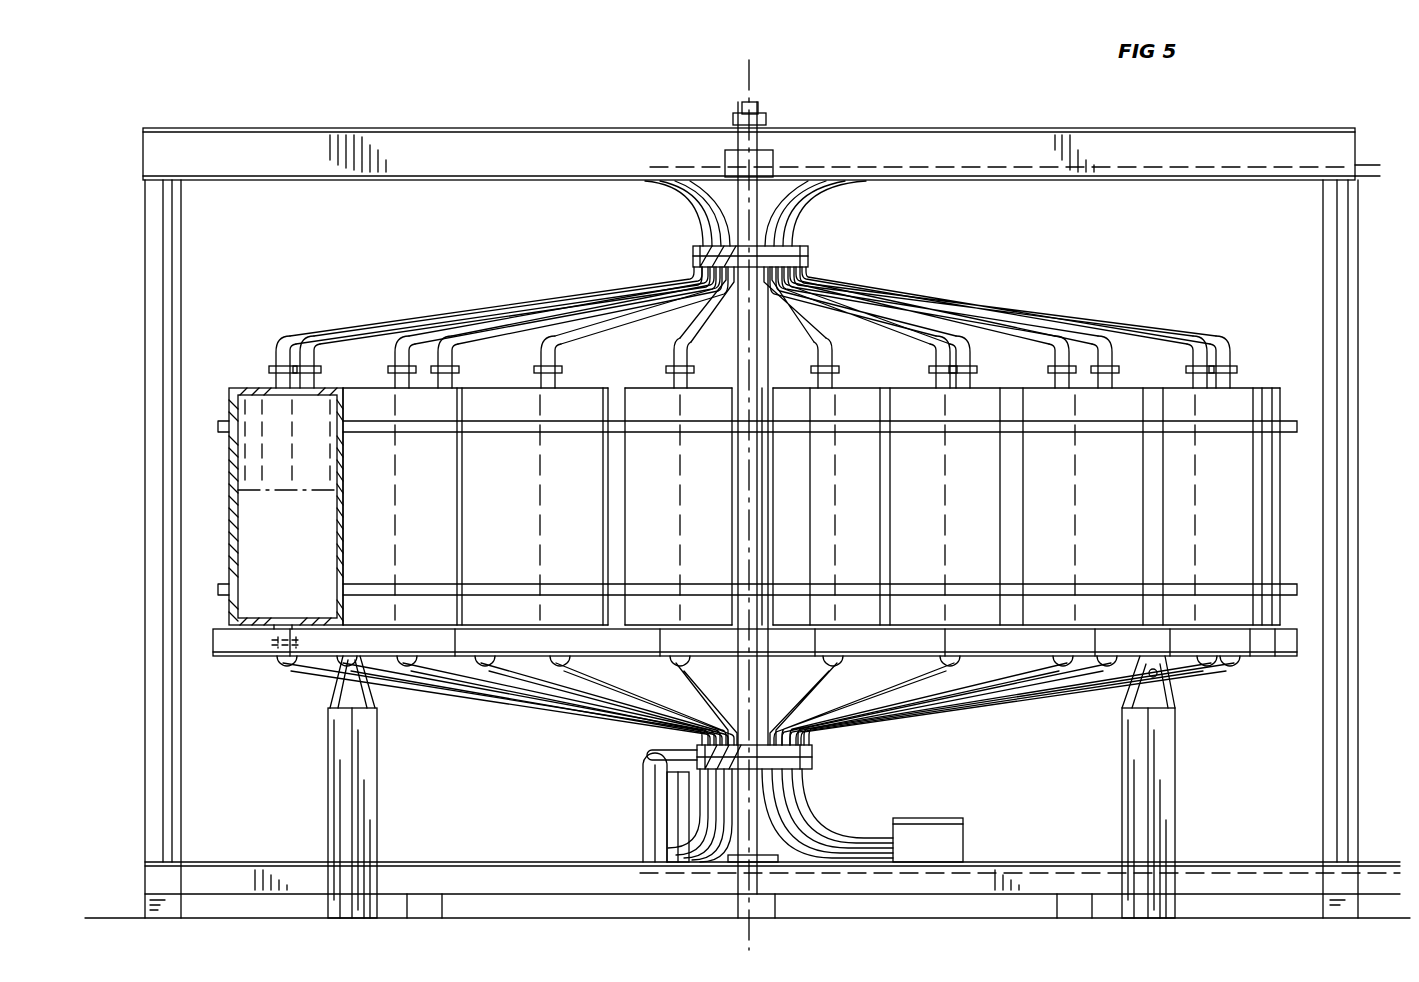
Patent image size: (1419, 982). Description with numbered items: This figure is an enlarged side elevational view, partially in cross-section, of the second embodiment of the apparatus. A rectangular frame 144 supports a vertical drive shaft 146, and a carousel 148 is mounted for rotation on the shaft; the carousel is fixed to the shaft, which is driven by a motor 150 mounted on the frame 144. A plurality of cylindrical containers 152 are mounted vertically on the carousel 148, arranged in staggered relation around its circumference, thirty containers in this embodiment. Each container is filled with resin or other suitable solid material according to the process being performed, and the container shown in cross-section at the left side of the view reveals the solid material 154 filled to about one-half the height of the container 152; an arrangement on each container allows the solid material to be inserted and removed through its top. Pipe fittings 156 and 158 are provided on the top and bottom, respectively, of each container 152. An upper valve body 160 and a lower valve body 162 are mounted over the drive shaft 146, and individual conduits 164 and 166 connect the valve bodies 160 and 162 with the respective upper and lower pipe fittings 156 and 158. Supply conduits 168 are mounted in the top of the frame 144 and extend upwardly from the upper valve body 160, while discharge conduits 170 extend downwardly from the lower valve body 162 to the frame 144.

The rectangular frame 144 is at (1045, 140).
The vertical drive shaft 146 is at (760, 104).
The carousel 148 is at (1245, 660).
The motor 150 is at (943, 838).
The cylindrical containers 152 is at (343, 500).
The solid material 154 is at (300, 490).
The upper pipe fittings 156 is at (310, 380).
The lower pipe fittings 158 is at (268, 657).
The upper valve body 160 is at (812, 256).
The lower valve body 162 is at (815, 757).
The individual conduits 164 is at (480, 330).
The individual conduits 166 is at (532, 700).
The supply conduits 168 is at (835, 190).
The discharge conduits 170 is at (818, 815).